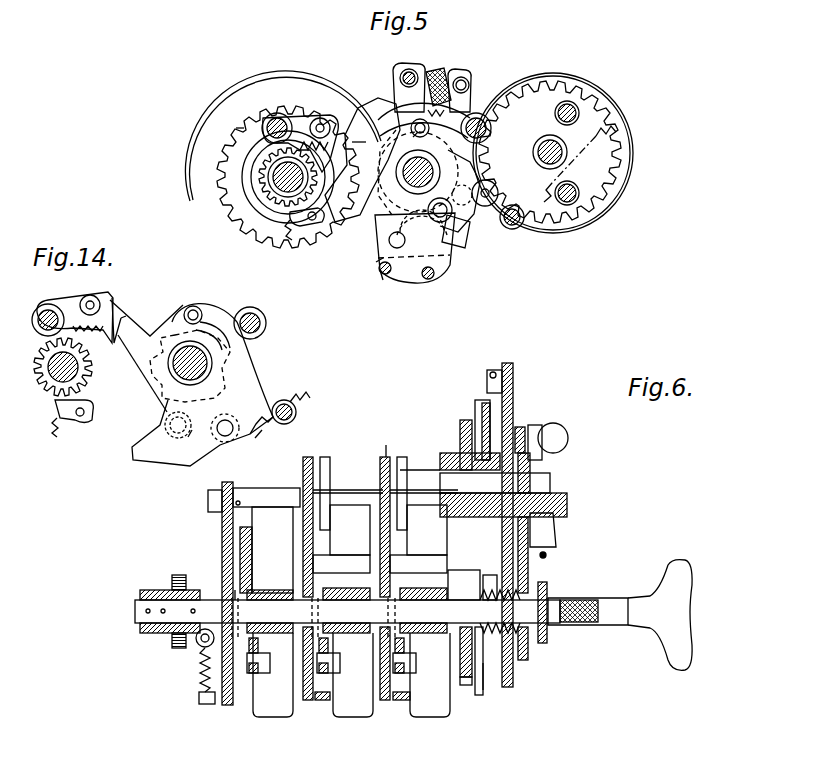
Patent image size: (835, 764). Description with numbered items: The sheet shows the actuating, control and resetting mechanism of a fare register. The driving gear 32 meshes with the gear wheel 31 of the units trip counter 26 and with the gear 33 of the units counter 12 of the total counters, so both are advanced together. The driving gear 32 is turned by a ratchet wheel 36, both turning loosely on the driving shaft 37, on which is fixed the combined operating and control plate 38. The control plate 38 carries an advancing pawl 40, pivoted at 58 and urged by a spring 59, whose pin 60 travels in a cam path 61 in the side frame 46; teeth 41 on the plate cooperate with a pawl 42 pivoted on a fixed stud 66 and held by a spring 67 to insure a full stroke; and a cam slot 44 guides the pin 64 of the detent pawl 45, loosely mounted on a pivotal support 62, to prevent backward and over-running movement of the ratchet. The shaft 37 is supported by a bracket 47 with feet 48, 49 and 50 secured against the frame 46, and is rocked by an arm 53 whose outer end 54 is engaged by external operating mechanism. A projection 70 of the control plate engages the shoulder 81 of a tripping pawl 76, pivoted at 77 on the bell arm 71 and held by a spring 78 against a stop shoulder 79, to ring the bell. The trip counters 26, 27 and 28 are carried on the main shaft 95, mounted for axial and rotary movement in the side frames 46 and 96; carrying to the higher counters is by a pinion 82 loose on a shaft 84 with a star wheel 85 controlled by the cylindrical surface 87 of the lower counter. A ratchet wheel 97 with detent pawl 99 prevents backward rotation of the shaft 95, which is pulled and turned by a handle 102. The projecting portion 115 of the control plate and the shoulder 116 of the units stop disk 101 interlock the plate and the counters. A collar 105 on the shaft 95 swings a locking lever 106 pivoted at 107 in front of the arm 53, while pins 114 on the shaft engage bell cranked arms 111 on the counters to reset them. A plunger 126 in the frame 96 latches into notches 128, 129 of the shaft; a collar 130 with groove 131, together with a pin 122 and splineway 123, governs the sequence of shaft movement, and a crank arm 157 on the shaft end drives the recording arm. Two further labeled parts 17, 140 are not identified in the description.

In FIG. 5, the units counter of the total counters 12 is at (612, 101).
In FIG. 5, the shaft 17 is at (550, 152).
In FIG. 6, the units counter 26 is at (433, 713).
In FIG. 6, the tens counter 27 is at (353, 713).
In FIG. 5, the hundreds counter 28 is at (222, 100).
In FIG. 6, the hundreds counter 28 is at (273, 713).
In FIG. 5, the gear wheel 31 is at (232, 133).
In FIG. 14, the gear wheel 31 is at (133, 313).
In FIG. 6, the gear wheel 31 is at (470, 685).
In FIG. 5, the driving gear 32 is at (452, 242).
In FIG. 6, the driving gear 32 is at (463, 425).
In FIG. 5, the gear 33 is at (560, 100).
In FIG. 14, the ratchet wheel 36 is at (170, 338).
In FIG. 6, the ratchet wheel 36 is at (550, 522).
In FIG. 14, the driving shaft 37 is at (212, 363).
In FIG. 6, the driving shaft 37 is at (547, 482).
In FIG. 5, the control plate 38 is at (477, 220).
In FIG. 14, the control plate 38 is at (100, 373).
In FIG. 6, the control plate 38 is at (520, 430).
In FIG. 5, the advancing pawl 40 is at (455, 192).
In FIG. 14, the advancing pawl 40 is at (175, 417).
In FIG. 5, the teeth 41 is at (507, 167).
In FIG. 14, the teeth 41 is at (255, 438).
In FIG. 5, the pawl 42 is at (488, 205).
In FIG. 14, the pawl 42 is at (287, 424).
In FIG. 5, the cam slot 44 is at (395, 127).
In FIG. 14, the cam slot 44 is at (213, 333).
In FIG. 5, the detent pawl 45 is at (455, 117).
In FIG. 14, the detent pawl 45 is at (258, 316).
In FIG. 14, the side frame 46 is at (135, 455).
In FIG. 6, the side frame 46 is at (513, 405).
In FIG. 5, the bracket 47 is at (413, 255).
In FIG. 6, the bracket 47 is at (462, 470).
In FIG. 5, the foot 48 is at (408, 78).
In FIG. 5, the foot 49 is at (414, 120).
In FIG. 5, the foot 50 is at (395, 277).
In FIG. 6, the arm 53 is at (553, 507).
In FIG. 6, the outer end of the arm 54 is at (573, 443).
In FIG. 5, the pivot 58 is at (480, 207).
In FIG. 5, the spring 59 is at (468, 195).
In FIG. 5, the pin 60 is at (430, 210).
In FIG. 14, the pin 60 is at (167, 412).
In FIG. 14, the cam path 61 is at (188, 437).
In FIG. 5, the pivotal support 62 is at (490, 128).
In FIG. 5, the pin 64 is at (415, 135).
In FIG. 14, the pin 64 is at (195, 310).
In FIG. 5, the fixed stud 66 is at (522, 218).
In FIG. 14, the fixed stud 66 is at (295, 412).
In FIG. 5, the spring 67 is at (613, 145).
In FIG. 5, the projection 70 is at (303, 190).
In FIG. 5, the bell arm 71 is at (293, 118).
In FIG. 14, the bell arm 71 is at (72, 302).
In FIG. 5, the tripping pawl 76 is at (340, 133).
In FIG. 14, the tripping pawl 76 is at (120, 303).
In FIG. 5, the pivot 77 is at (322, 122).
In FIG. 5, the spring 78 is at (270, 144).
In FIG. 5, the stop shoulder 79 is at (335, 128).
In FIG. 14, the stop shoulder 79 is at (105, 302).
In FIG. 5, the shoulder 81 is at (361, 135).
In FIG. 6, the pinion 82 is at (388, 460).
In FIG. 5, the shaft 84 is at (383, 258).
In FIG. 6, the shaft 84 is at (213, 502).
In FIG. 6, the star wheel 85 is at (402, 472).
In FIG. 6, the controlling cylindrical surface 87 is at (315, 700).
In FIG. 6, the main shaft 95 is at (140, 613).
In FIG. 6, the side frame 96 is at (223, 527).
In FIG. 5, the ratchet wheel 97 is at (263, 180).
In FIG. 5, the detent pawl 99 is at (280, 217).
In FIG. 5, the units stop disk 101 is at (263, 162).
In FIG. 6, the units stop disk 101 is at (484, 663).
In FIG. 6, the handle 102 is at (688, 638).
In FIG. 6, the collar 105 is at (553, 587).
In FIG. 6, the locking lever 106 is at (545, 530).
In FIG. 6, the pivot 107 is at (547, 557).
In FIG. 6, the bell cranked arm 111 is at (262, 657).
In FIG. 6, the pins 114 is at (320, 620).
In FIG. 5, the projecting portion 115 is at (332, 192).
In FIG. 6, the projecting portion 115 is at (523, 572).
In FIG. 5, the projecting shoulder 116 is at (327, 180).
In FIG. 6, the pin 122 is at (222, 660).
In FIG. 6, the splineway 123 is at (230, 627).
In FIG. 6, the plunger 126 is at (240, 583).
In FIG. 6, the notch 128 is at (231, 608).
In FIG. 6, the notch 129 is at (240, 603).
In FIG. 6, the collar 130 is at (200, 590).
In FIG. 6, the groove 131 is at (197, 632).
In FIG. 6, the collar 140 is at (162, 590).
In FIG. 6, the crank arm 157 is at (140, 632).